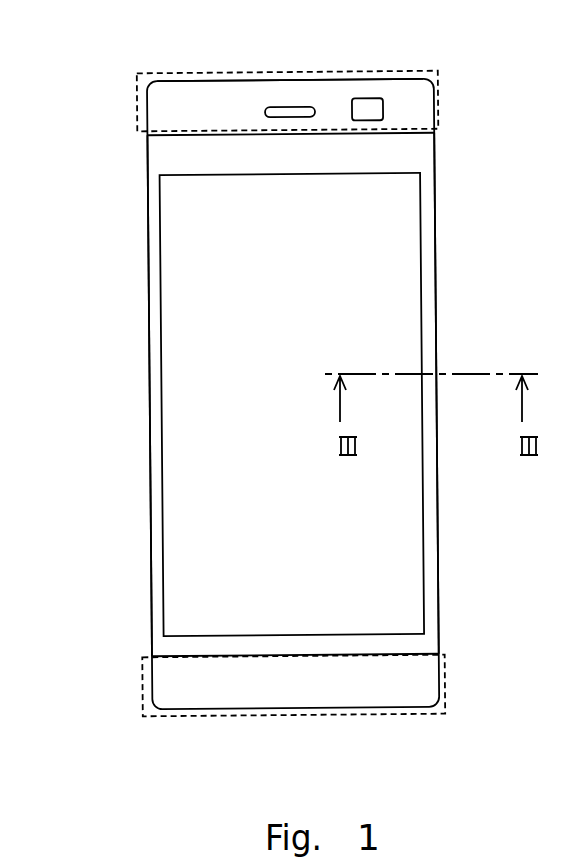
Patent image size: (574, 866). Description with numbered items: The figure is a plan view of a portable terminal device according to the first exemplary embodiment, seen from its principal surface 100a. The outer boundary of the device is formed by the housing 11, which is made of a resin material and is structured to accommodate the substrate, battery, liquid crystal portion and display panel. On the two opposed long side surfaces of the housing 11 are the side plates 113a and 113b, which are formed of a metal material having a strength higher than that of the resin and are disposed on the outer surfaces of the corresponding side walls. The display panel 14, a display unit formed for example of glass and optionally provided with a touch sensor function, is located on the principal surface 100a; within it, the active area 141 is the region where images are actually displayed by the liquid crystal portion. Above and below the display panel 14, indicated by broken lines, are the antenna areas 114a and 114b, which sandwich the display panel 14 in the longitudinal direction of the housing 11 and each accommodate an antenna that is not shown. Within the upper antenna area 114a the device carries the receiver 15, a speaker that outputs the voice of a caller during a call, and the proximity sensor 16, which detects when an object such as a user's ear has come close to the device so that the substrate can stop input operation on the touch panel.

The housing 11 is at (420, 92).
The principal surface 100a is at (165, 110).
The display panel 14 is at (407, 158).
The active area 141 is at (422, 220).
The receiver 15 is at (291, 108).
The proximity sensor 16 is at (366, 107).
The side plate 113a is at (437, 533).
The side plate 113b is at (152, 511).
The antenna area 114a is at (440, 100).
The antenna area 114b is at (446, 683).